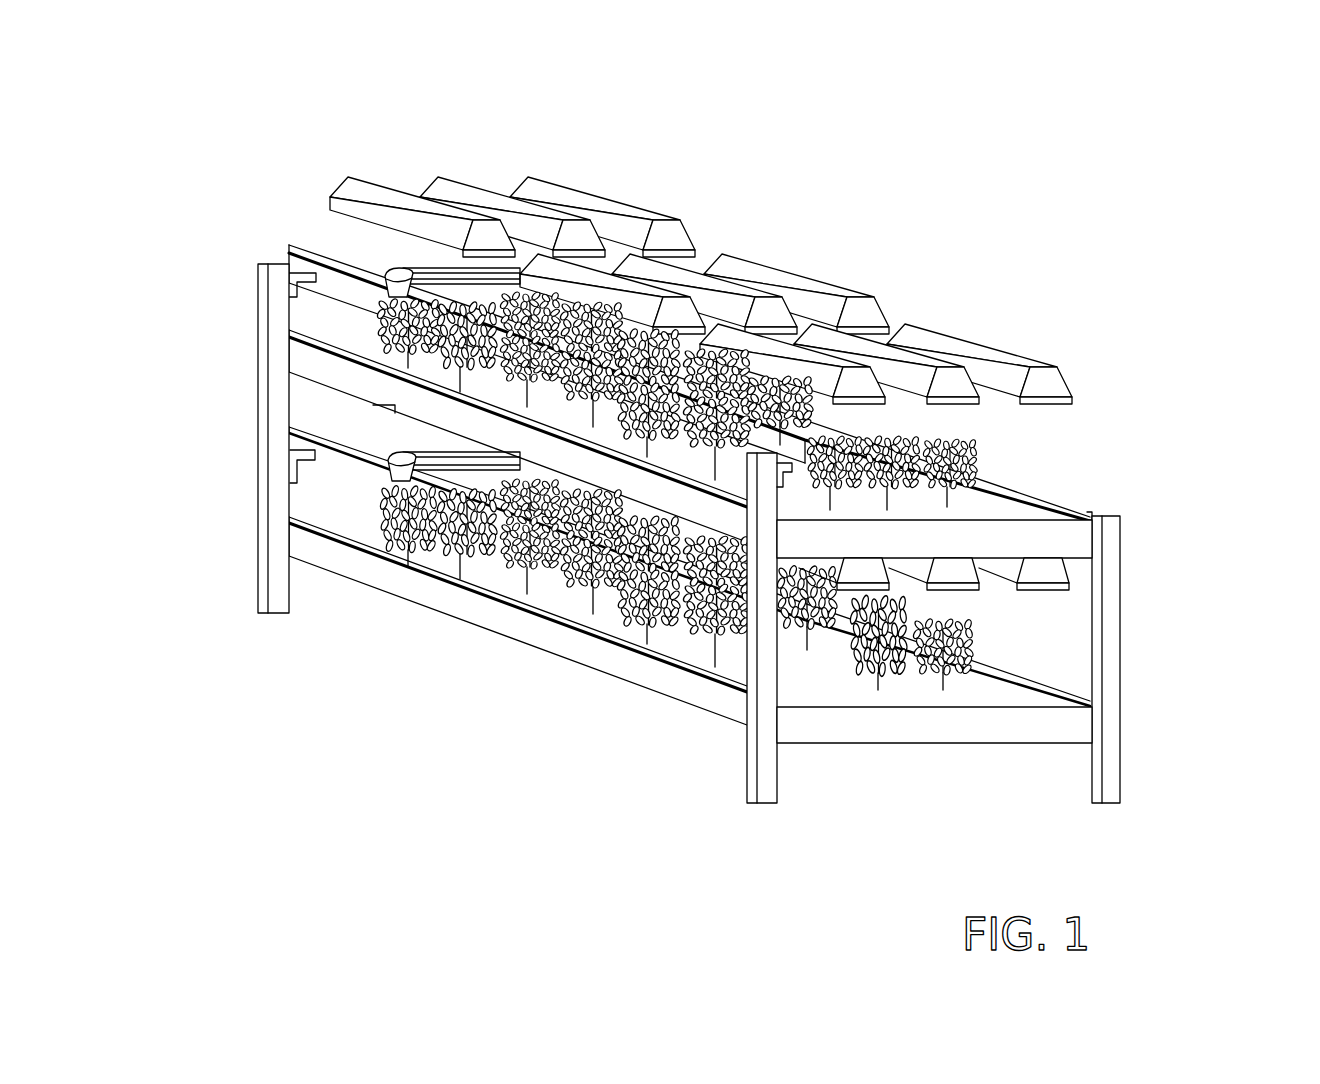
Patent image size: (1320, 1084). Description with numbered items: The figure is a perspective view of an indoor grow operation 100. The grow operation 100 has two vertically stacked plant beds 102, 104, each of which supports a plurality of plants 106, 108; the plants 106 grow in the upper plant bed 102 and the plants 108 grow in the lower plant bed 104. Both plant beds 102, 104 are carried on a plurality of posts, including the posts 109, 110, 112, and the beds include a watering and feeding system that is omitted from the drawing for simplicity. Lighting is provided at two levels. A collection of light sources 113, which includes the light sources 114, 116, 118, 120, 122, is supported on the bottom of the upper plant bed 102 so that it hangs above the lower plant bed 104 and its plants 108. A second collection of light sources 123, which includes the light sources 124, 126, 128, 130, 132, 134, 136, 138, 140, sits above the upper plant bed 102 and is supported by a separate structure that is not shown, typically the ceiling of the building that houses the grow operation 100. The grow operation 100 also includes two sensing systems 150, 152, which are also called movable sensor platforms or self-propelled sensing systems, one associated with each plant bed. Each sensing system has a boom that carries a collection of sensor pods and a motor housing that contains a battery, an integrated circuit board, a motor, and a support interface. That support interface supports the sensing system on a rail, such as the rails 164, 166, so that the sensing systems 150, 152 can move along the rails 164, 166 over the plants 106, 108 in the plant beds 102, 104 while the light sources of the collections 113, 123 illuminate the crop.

The grow operation 100 is at (1160, 296).
The plant bed 102 is at (1018, 522).
The plant bed 104 is at (1040, 706).
The plants 106 is at (992, 443).
The plants 108 is at (727, 598).
The post 109 is at (1118, 787).
The post 110 is at (765, 792).
The post 112 is at (260, 596).
The collection of light sources 113 is at (312, 403).
The light source 114 is at (372, 406).
The light source 116 is at (588, 588).
The light source 118 is at (833, 590).
The light source 120 is at (940, 590).
The light source 122 is at (1058, 581).
The second collection of light sources 123 is at (625, 226).
The light source 124 is at (380, 180).
The light source 126 is at (460, 180).
The light source 128 is at (556, 180).
The light source 130 is at (795, 345).
The light source 132 is at (602, 265).
The light source 134 is at (602, 253).
The light source 136 is at (992, 345).
The light source 138 is at (887, 343).
The light source 140 is at (815, 322).
The sensing system 150 is at (385, 290).
The sensing system 152 is at (407, 483).
The rail 164 is at (312, 455).
The rail 166 is at (290, 270).